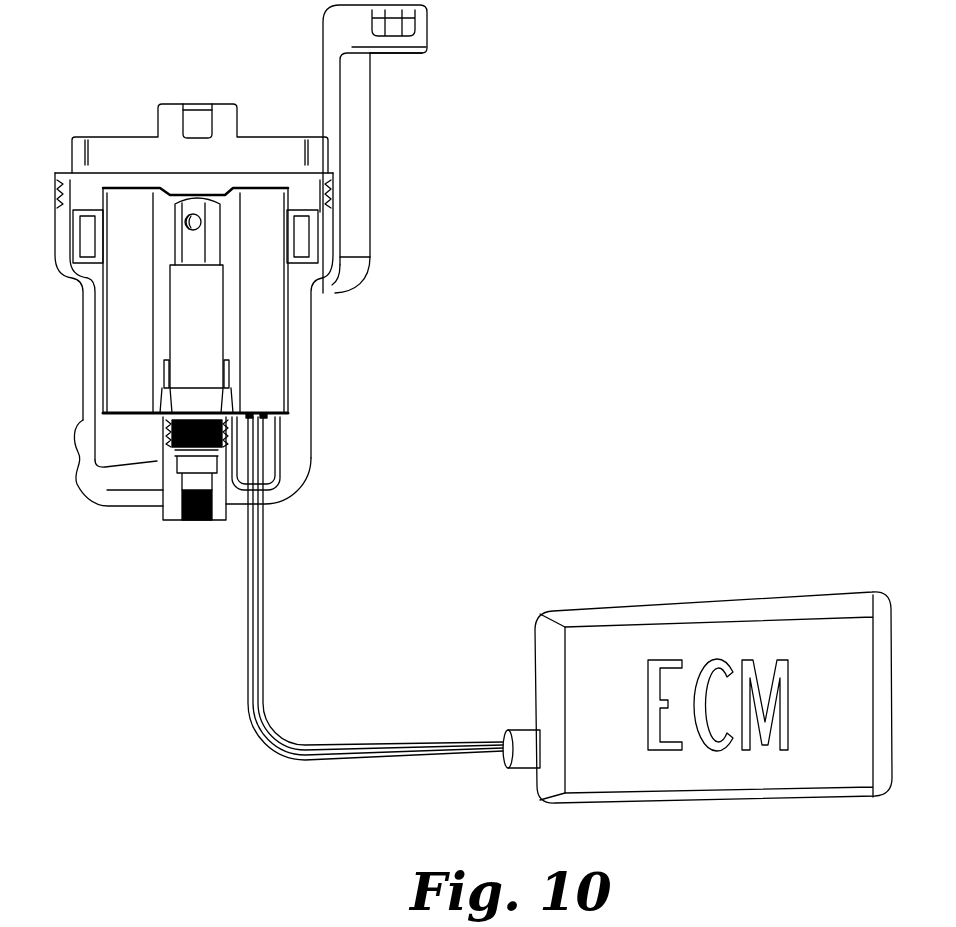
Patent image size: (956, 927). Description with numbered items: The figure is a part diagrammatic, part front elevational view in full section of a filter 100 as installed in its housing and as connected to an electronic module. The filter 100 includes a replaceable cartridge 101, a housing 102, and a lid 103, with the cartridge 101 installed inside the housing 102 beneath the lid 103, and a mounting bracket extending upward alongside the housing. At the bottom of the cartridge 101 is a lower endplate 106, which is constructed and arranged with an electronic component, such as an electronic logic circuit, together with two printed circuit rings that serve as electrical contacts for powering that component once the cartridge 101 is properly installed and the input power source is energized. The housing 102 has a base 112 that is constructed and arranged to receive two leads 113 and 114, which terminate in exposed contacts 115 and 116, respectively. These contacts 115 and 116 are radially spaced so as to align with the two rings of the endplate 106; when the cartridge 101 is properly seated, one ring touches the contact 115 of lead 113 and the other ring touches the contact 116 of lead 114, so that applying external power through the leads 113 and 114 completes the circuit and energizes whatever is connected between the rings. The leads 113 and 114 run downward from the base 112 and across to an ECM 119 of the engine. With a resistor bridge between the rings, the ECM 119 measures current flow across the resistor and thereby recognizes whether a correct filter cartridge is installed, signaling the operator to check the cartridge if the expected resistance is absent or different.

The filter 100 is at (396, 150).
The replaceable cartridge 101 is at (265, 328).
The housing 102 is at (330, 241).
The lid 103 is at (150, 146).
The lower endplate 106 is at (118, 414).
The base 112 is at (173, 473).
The lead 113 is at (265, 672).
The lead 114 is at (248, 609).
The exposed contact 115 is at (270, 428).
The exposed contact 116 is at (250, 423).
The ECM 119 is at (612, 637).